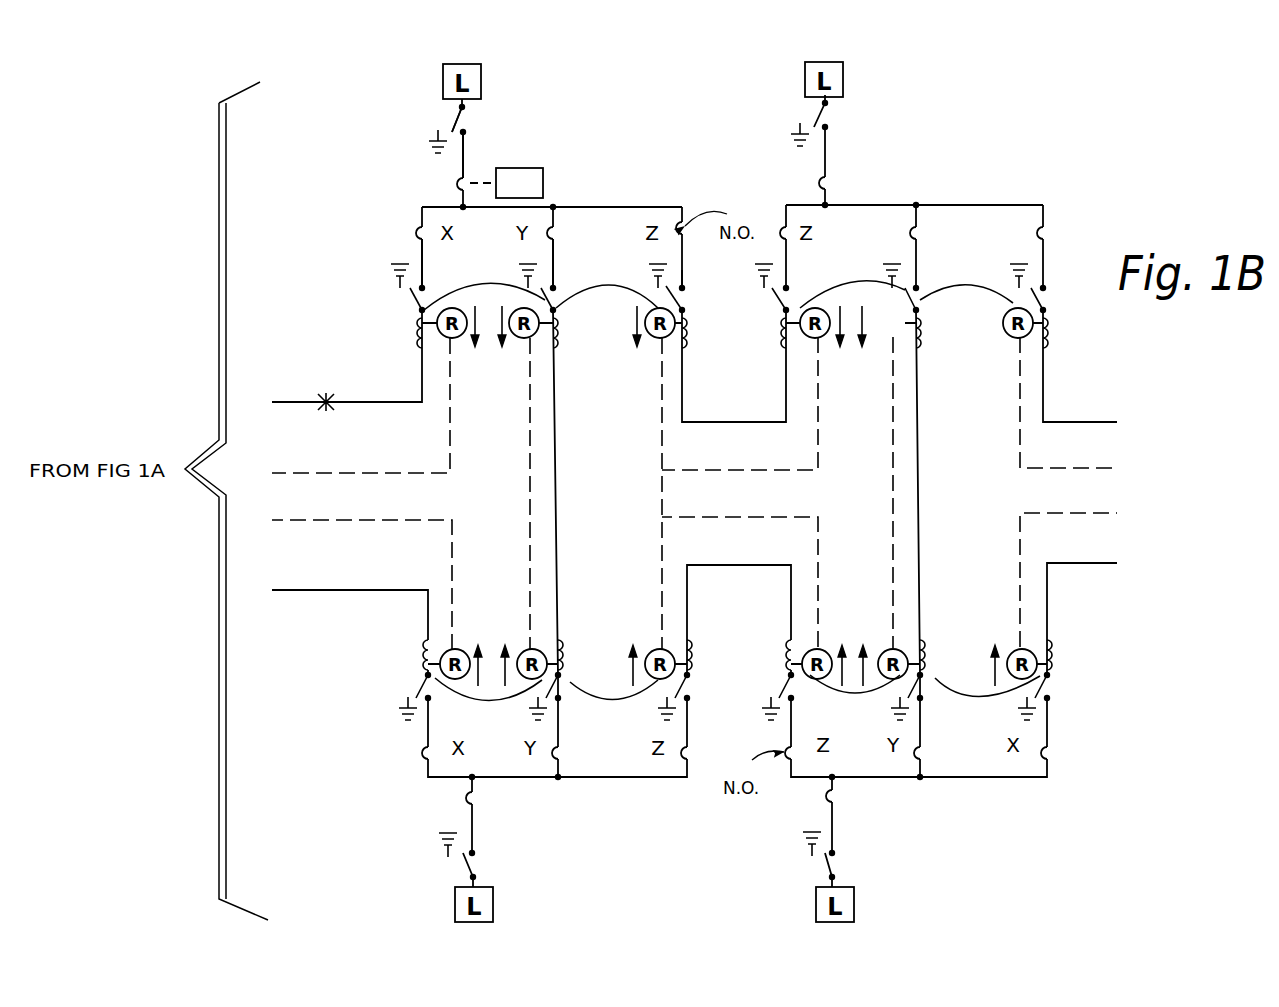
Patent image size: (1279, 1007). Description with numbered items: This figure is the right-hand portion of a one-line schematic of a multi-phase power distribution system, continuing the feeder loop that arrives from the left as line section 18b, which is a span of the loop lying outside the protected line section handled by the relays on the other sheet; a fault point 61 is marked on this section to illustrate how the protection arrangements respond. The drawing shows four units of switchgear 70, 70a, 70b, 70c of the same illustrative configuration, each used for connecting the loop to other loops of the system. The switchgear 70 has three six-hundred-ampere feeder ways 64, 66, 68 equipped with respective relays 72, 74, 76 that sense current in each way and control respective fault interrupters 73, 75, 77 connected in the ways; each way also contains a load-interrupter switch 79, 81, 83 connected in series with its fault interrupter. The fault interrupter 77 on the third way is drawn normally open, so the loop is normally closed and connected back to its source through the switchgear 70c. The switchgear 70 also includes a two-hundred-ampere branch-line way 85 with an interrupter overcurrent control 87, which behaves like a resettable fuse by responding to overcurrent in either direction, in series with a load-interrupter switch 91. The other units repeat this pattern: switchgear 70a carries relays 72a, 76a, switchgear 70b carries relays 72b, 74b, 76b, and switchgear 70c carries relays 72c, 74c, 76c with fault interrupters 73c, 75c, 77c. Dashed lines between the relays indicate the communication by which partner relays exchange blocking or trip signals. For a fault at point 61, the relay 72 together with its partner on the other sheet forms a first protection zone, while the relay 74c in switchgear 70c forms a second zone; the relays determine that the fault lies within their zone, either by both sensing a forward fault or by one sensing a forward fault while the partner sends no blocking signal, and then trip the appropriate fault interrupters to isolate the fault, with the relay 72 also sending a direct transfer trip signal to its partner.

The line section 18b is at (308, 400).
The fault point 61 is at (327, 395).
The feeder way 64 is at (420, 257).
The feeder way 66 is at (554, 258).
The feeder way 68 is at (684, 272).
The switchgear 70 is at (593, 178).
The switchgear 70a is at (973, 190).
The switchgear 70b is at (993, 788).
The switchgear 70c is at (586, 787).
The relay 72 is at (448, 340).
The relay 72a is at (822, 337).
The relay 72b is at (812, 677).
The relay 72c is at (452, 652).
The fault interrupter 73 is at (412, 231).
The fault interrupter 73c is at (423, 755).
The relay 74 is at (525, 340).
The relay 74b is at (887, 648).
The relay 74c is at (536, 648).
The fault interrupter 75 is at (552, 230).
The fault interrupter 75c is at (553, 757).
The relay 76 is at (658, 340).
The relay 76a is at (1022, 337).
The relay 76b is at (1047, 698).
The relay 76c is at (652, 650).
The fault interrupter 77 is at (677, 225).
The fault interrupter 77c is at (681, 757).
The load-interrupter switch 79 is at (413, 298).
The load-interrupter switch 81 is at (548, 300).
The load-interrupter switch 83 is at (680, 296).
The branch-line way 85 is at (466, 150).
The interrupter overcurrent control 87 is at (543, 178).
The load-interrupter switch 91 is at (455, 118).